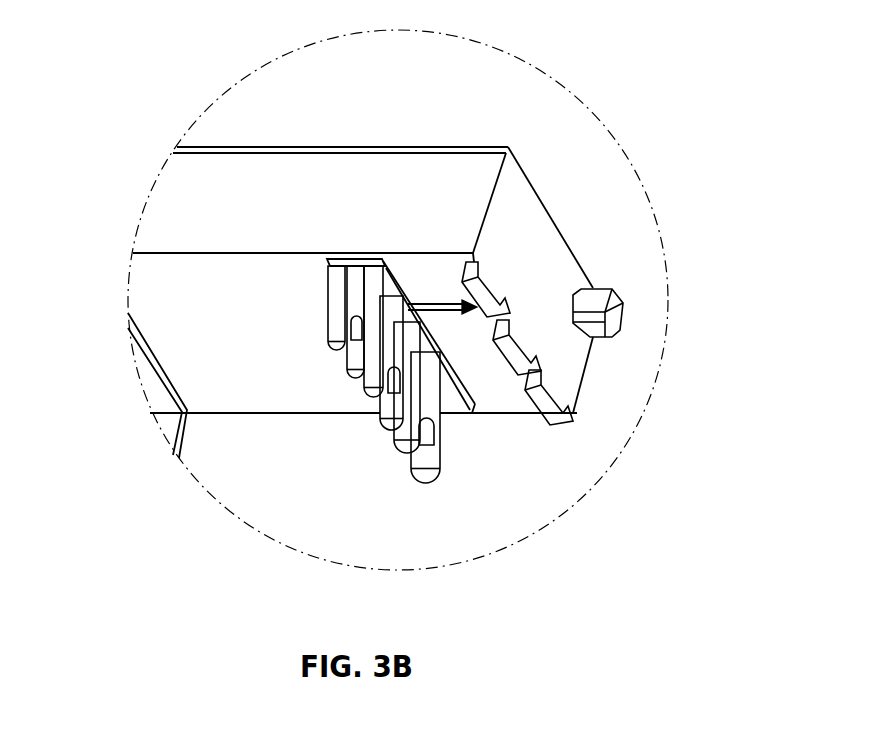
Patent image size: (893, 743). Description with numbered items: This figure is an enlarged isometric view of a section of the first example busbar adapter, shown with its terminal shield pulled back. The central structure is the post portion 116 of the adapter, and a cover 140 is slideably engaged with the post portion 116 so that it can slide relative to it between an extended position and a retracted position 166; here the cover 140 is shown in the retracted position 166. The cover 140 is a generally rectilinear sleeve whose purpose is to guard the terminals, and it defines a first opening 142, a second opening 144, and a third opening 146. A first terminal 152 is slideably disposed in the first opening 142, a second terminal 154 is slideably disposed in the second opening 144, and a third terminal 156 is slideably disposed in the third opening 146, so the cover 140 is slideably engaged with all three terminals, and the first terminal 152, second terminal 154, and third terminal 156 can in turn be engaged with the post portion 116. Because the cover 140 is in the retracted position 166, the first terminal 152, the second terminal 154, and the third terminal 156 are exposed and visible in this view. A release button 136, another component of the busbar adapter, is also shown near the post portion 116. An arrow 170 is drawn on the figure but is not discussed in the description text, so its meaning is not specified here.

The post portion 116 is at (488, 170).
The release button 136 is at (610, 312).
The cover 140 is at (340, 272).
The first opening 142 is at (368, 303).
The second opening 144 is at (403, 357).
The third opening 146 is at (440, 407).
The first terminal 152 is at (337, 350).
The second terminal 154 is at (372, 397).
The third terminal 156 is at (405, 453).
The retracted position 166 is at (492, 480).
The insertion direction arrow 170 is at (478, 309).